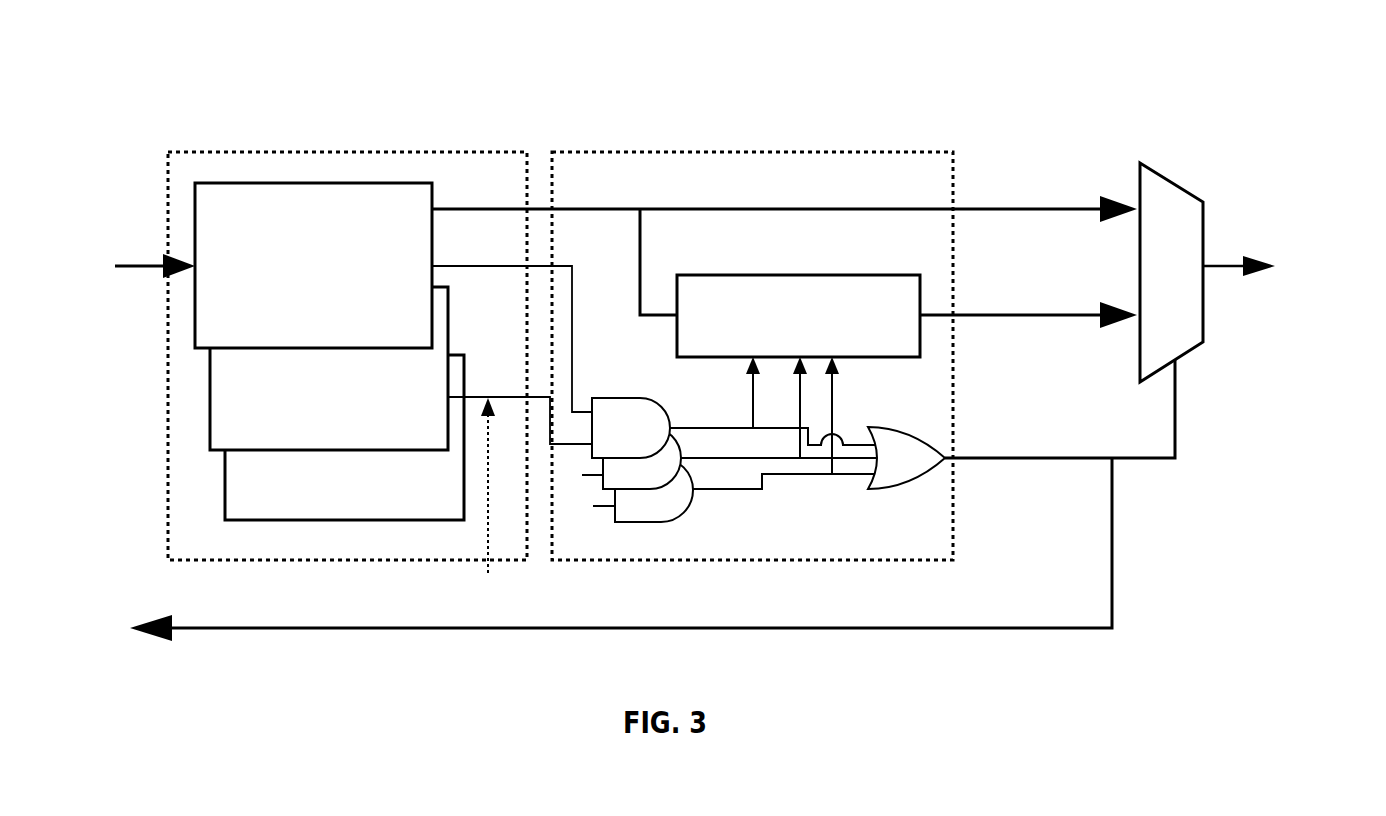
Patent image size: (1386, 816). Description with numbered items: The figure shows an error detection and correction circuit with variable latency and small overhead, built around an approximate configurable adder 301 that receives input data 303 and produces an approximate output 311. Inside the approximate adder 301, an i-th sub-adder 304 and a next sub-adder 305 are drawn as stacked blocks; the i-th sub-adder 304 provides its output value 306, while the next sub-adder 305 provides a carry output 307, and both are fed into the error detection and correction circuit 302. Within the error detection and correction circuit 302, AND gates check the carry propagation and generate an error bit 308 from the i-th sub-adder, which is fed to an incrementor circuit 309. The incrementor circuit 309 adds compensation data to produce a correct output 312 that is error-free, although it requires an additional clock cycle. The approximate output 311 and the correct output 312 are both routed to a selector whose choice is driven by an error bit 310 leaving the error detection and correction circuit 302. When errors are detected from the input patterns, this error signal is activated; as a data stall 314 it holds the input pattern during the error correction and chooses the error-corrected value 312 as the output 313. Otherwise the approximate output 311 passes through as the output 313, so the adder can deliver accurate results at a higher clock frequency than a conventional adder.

The approximate adder 301 is at (246, 134).
The error detection and correction circuit 302 is at (666, 137).
The input 303 is at (119, 268).
The i-th sub-adder 304 is at (313, 265).
The (i+1)-th sub-adder 305 is at (337, 403).
The output of i-th sub-adder 306 is at (512, 322).
The carry output of (i+1)-th sub-adder 307 is at (520, 502).
The error bit from i-th sub-adder 308 is at (706, 417).
The incrementor circuit 309 is at (798, 374).
The error bit 310 is at (1060, 441).
The approximate output 311 is at (784, 237).
The correct output 312 is at (1028, 297).
The output 313 is at (1275, 267).
The data stall 314 is at (584, 554).